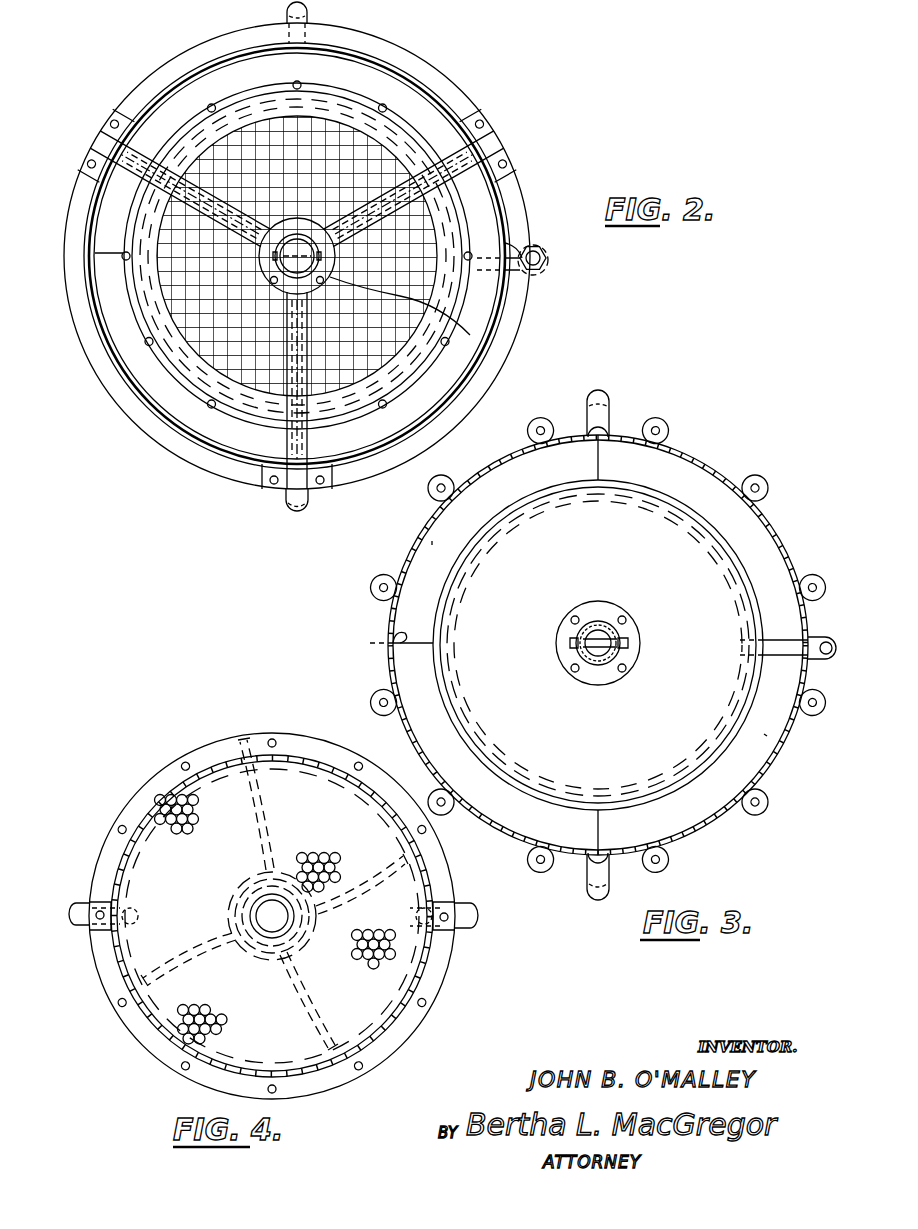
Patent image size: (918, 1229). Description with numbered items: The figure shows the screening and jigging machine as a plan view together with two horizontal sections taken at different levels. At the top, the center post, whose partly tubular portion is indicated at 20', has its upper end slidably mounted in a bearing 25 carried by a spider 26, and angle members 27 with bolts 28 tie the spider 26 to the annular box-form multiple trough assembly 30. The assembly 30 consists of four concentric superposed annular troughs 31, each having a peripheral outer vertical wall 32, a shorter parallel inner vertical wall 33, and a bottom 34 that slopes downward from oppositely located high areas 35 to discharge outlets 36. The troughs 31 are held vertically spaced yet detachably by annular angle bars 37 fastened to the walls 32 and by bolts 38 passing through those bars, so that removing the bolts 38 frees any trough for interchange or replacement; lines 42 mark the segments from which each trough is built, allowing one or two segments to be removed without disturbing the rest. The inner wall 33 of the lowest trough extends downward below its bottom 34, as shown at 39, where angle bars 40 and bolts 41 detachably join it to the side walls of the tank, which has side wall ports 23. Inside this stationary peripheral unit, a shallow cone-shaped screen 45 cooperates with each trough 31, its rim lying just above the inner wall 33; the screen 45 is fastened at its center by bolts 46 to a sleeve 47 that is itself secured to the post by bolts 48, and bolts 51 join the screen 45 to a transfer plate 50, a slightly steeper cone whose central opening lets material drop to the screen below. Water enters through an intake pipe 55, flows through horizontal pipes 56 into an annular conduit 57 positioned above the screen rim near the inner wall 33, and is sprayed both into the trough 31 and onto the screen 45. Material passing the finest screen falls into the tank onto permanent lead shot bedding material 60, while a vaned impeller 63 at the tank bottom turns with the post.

In FIG. 3, the tubular portion of center post 20' is at (629, 627).
In FIG. 4, the tubular portion of center post 20' is at (241, 916).
In FIG. 4, the side wall ports 23 is at (88, 904).
In FIG. 2, the bearing 25 is at (333, 273).
In FIG. 2, the spider 26 is at (135, 146).
In FIG. 2, the angle members 27 is at (503, 166).
In FIG. 2, the bolts 28 is at (92, 160).
In FIG. 3, the annular box-form multiple trough assembly 30 is at (432, 543).
In FIG. 3, the annular box-form trough 31 is at (765, 735).
In FIG. 2, the peripheral outer vertical wall 32 is at (116, 362).
In FIG. 3, the peripheral outer vertical wall 32 is at (714, 463).
In FIG. 3, the inner vertical wall 33 is at (738, 582).
In FIG. 2, the bottom 34 is at (468, 355).
In FIG. 3, the bottom 34 is at (764, 518).
In FIG. 2, the high areas 35 is at (124, 253).
In FIG. 3, the high areas 35 is at (773, 657).
In FIG. 2, the discharge outlets 36 is at (291, 12).
In FIG. 3, the discharge outlets 36 is at (603, 397).
In FIG. 3, the annular angle bars 37 is at (656, 428).
In FIG. 3, the bolts 38 is at (542, 428).
In FIG. 4, the downward extension of inner wall 39 is at (425, 965).
In FIG. 4, the angle bars 40 is at (182, 1066).
In FIG. 4, the bolts 41 is at (190, 758).
In FIG. 2, the segment lines 42 is at (308, 280).
In FIG. 3, the segment lines 42 is at (598, 463).
In FIG. 2, the screen 45 is at (220, 340).
In FIG. 3, the bolts 46 is at (624, 670).
In FIG. 3, the sleeve 47 is at (585, 668).
In FIG. 3, the bolts 48 is at (580, 642).
In FIG. 3, the transfer plate 50 is at (688, 738).
In FIG. 2, the bolts 51 is at (213, 103).
In FIG. 2, the intake pipe 55 is at (546, 256).
In FIG. 2, the horizontal pipes 56 is at (540, 273).
In FIG. 2, the annular conduit 57 is at (427, 362).
In FIG. 4, the lead shot bedding material 60 is at (200, 831).
In FIG. 4, the vaned impeller 63 is at (241, 740).